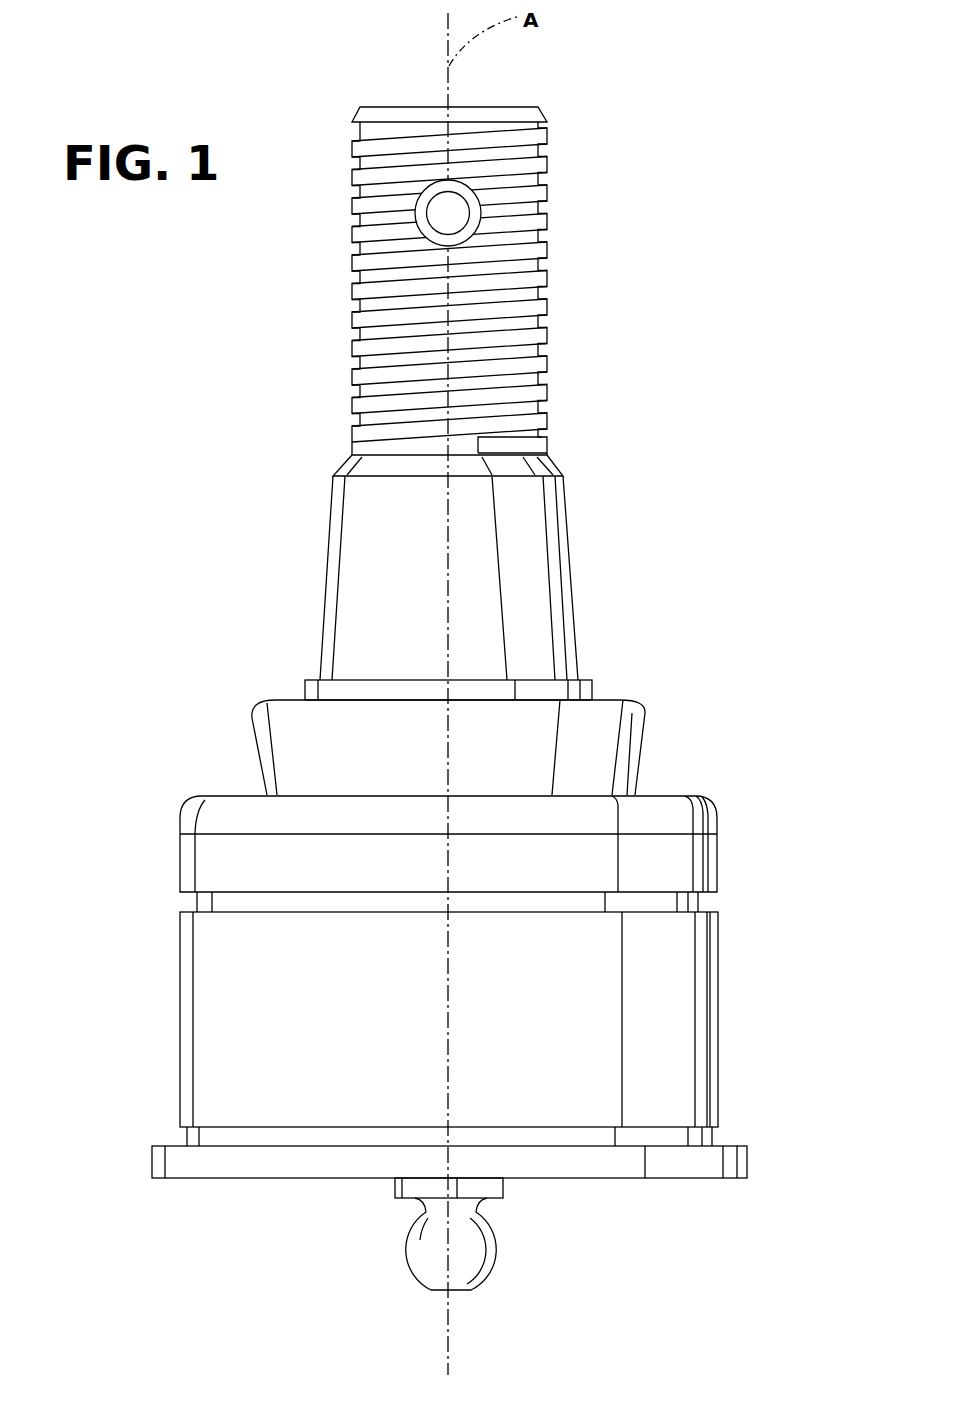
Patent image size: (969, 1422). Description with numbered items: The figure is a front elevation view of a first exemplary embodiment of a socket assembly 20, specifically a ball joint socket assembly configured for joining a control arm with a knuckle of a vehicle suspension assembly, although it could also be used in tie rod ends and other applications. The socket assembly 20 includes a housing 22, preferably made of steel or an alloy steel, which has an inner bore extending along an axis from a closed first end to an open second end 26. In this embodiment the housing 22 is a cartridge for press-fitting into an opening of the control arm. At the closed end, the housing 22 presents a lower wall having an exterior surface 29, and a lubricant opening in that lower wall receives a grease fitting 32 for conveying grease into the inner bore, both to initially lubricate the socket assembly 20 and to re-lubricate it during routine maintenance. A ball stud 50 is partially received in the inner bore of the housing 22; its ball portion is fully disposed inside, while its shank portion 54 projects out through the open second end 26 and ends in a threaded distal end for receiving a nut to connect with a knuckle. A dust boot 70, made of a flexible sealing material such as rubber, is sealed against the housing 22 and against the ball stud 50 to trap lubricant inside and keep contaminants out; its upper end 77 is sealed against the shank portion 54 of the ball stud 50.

The socket assembly 20 is at (680, 246).
The housing 22 is at (175, 873).
The open second end 26 is at (660, 795).
The exterior surface 29 is at (593, 1180).
The grease fitting 32 is at (468, 1247).
The ball stud 50 is at (572, 522).
The shank portion 54 is at (385, 575).
The dust boot 70 is at (262, 698).
The upper end 77 is at (605, 681).